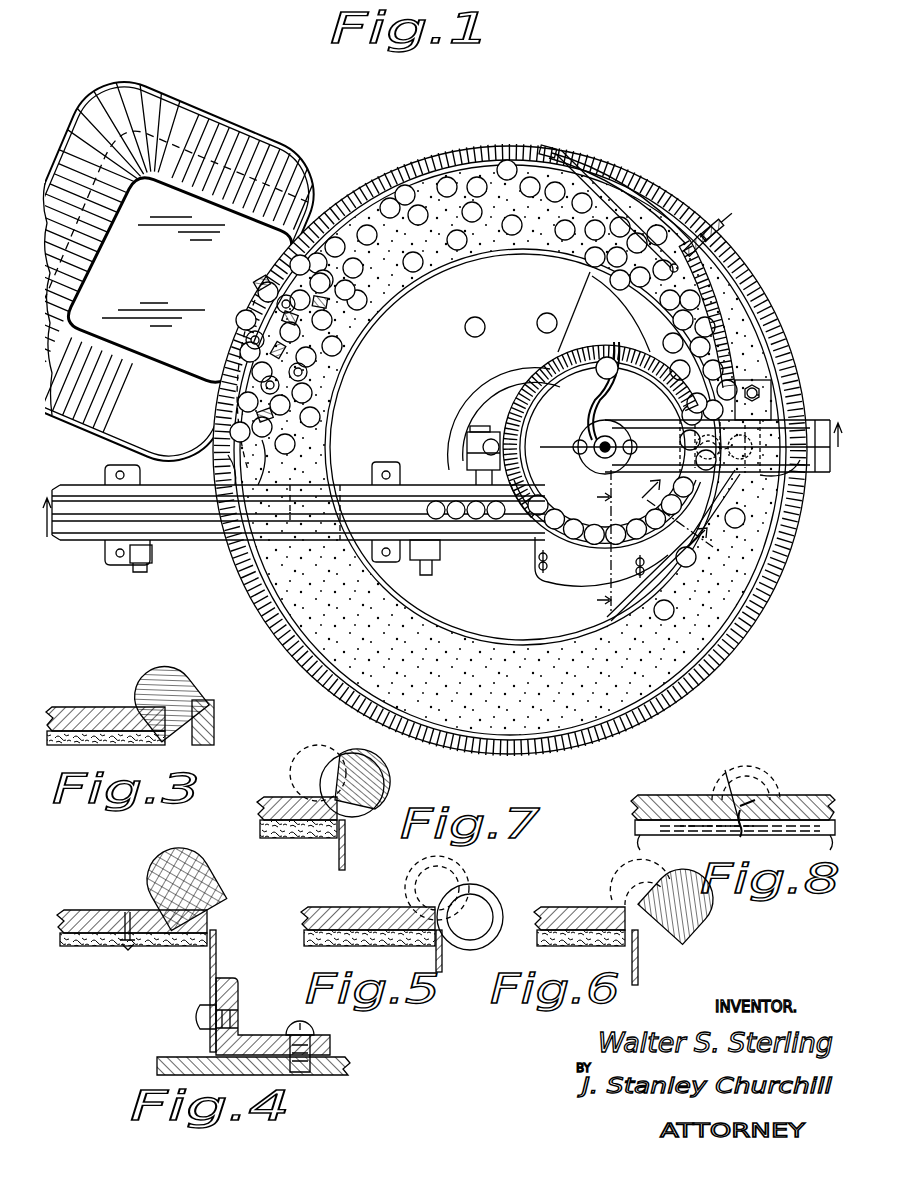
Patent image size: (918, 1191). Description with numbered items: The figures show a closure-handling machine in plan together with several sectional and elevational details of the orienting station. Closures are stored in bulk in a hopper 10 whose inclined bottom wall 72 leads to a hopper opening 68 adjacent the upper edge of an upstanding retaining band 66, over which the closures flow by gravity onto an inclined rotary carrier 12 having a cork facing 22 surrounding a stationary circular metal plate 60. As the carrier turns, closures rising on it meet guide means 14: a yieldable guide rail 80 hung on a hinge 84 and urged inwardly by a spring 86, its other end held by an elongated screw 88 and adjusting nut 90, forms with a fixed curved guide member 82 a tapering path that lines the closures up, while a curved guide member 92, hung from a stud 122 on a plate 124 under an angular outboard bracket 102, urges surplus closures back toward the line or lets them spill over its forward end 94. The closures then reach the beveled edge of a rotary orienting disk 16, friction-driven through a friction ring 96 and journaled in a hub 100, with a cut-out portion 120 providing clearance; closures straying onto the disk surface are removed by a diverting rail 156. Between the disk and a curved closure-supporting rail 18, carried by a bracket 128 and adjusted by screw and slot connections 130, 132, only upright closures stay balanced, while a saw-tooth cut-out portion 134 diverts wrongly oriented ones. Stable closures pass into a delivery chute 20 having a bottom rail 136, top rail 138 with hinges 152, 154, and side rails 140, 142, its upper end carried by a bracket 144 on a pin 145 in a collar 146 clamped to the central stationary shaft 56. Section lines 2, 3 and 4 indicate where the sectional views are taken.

In FIG. 1, the hopper 10 is at (245, 130).
In FIG. 1, the bottom wall 72 is at (179, 280).
In FIG. 1, the rotary carrier 12 is at (475, 163).
In FIG. 1, the retaining rim or band 66 is at (752, 278).
In FIG. 1, the carrier facing 22 is at (405, 185).
In FIG. 1, the circular metal plate 60 is at (523, 447).
In FIG. 1, the guide means 14 is at (665, 232).
In FIG. 1, the yieldable guide rail 80 is at (620, 197).
In FIG. 1, the hinge 84 is at (548, 147).
In FIG. 1, the spring 86 is at (578, 160).
In FIG. 1, the curved guide member 92 is at (733, 337).
In FIG. 3, the curved guide member 92 is at (214, 719).
In FIG. 1, the elongated screw 88 is at (712, 222).
In FIG. 1, the adjusting nut 90 is at (707, 242).
In FIG. 1, the fixed curved guide member 82 is at (585, 290).
In FIG. 1, the hopper opening 68 is at (232, 343).
In FIG. 1, the rotary orienting disk 16 is at (546, 375).
In FIG. 3, the rotary orienting disk 16 is at (101, 707).
In FIG. 7, the rotary orienting disk 16 is at (280, 805).
In FIG. 5, the rotary orienting disk 16 is at (358, 907).
In FIG. 6, the rotary orienting disk 16 is at (572, 907).
In FIG. 8, the rotary orienting disk 16 is at (795, 795).
In FIG. 4, the rotary orienting disk 16 is at (108, 910).
In FIG. 1, the diverting rail 156 is at (585, 375).
In FIG. 1, the hub 100 is at (578, 462).
In FIG. 1, the cut-out portion 120 is at (668, 432).
In FIG. 1, the angular outboard bracket 102 is at (775, 478).
In FIG. 1, the stud 122 is at (770, 383).
In FIG. 1, the plate 124 is at (762, 393).
In FIG. 1, the section line 2- 2 is at (441, 495).
In FIG. 1, the delivery or feed chute 20 is at (451, 478).
In FIG. 1, the hinge 152 is at (160, 562).
In FIG. 1, the hinge 154 is at (415, 565).
In FIG. 1, the bracket 144 is at (440, 552).
In FIG. 1, the pin 145 is at (470, 568).
In FIG. 1, the bottom rail 136 is at (305, 538).
In FIG. 1, the side rail 142 is at (333, 560).
In FIG. 1, the top rail 138 is at (256, 462).
In FIG. 1, the side rail 140 is at (247, 458).
In FIG. 1, the central stationary shaft 56 is at (482, 430).
In FIG. 1, the collar 146 is at (467, 440).
In FIG. 1, the bracket 128 is at (550, 585).
In FIG. 4, the bracket 128 is at (240, 990).
In FIG. 1, the closure-supporting rail 18 is at (552, 558).
In FIG. 7, the closure-supporting rail 18 is at (346, 858).
In FIG. 5, the closure-supporting rail 18 is at (444, 958).
In FIG. 6, the closure-supporting rail 18 is at (640, 968).
In FIG. 8, the closure-supporting rail 18 is at (680, 798).
In FIG. 4, the closure-supporting rail 18 is at (218, 960).
In FIG. 1, the forward end 94 is at (668, 562).
In FIG. 1, the section line 4- 4 is at (593, 542).
In FIG. 1, the section line 3- 3 is at (674, 516).
In FIG. 3, the friction ring 96 is at (127, 746).
In FIG. 7, the friction ring 96 is at (302, 838).
In FIG. 5, the friction ring 96 is at (355, 946).
In FIG. 6, the friction ring 96 is at (595, 946).
In FIG. 8, the friction ring 96 is at (640, 826).
In FIG. 4, the friction ring 96 is at (190, 946).
In FIG. 7, the saw-tooth cut-out portion 134 is at (385, 797).
In FIG. 5, the saw-tooth cut-out portion 134 is at (454, 903).
In FIG. 6, the saw-tooth cut-out portion 134 is at (667, 901).
In FIG. 8, the saw-tooth cut-out portion 134 is at (722, 768).
In FIG. 4, the screw and slot connection 130 is at (198, 1020).
In FIG. 4, the screw and slot connection 132 is at (314, 1030).